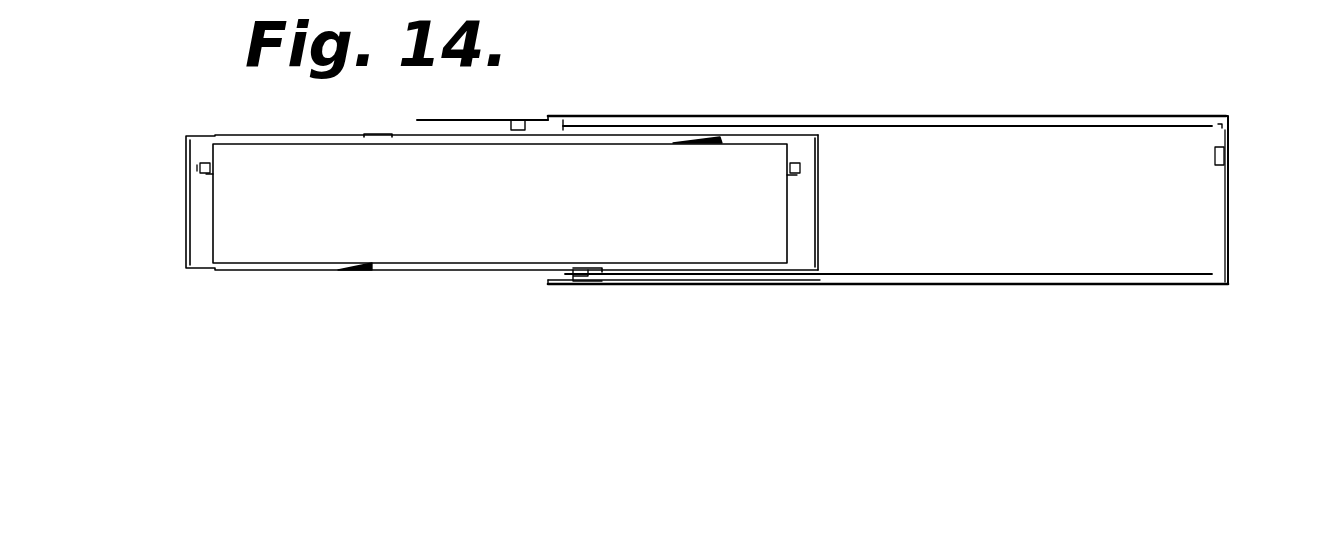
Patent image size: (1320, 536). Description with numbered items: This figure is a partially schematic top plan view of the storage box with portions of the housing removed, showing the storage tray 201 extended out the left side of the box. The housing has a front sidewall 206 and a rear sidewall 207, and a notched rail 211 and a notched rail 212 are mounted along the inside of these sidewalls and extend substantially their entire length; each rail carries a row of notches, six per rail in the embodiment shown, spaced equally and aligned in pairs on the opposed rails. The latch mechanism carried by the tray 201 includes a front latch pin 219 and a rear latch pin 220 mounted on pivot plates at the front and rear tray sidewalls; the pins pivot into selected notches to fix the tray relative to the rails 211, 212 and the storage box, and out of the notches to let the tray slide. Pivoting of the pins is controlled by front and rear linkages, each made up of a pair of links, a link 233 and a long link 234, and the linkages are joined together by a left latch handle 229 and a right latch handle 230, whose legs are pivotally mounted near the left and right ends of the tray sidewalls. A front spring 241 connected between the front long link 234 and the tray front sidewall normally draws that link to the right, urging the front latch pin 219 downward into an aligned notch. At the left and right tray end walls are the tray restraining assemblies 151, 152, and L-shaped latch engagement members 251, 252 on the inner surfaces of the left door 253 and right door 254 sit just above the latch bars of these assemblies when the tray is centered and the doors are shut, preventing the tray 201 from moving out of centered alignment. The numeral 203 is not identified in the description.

The storage tray 201 is at (198, 102).
The tray restraining assembly 151 is at (200, 165).
The tray restraining assembly 152 is at (800, 170).
The end cap 203 is at (1203, 117).
The front sidewall 206 is at (1158, 286).
The rear sidewall 207 is at (1074, 116).
The notched rail 211 is at (1066, 276).
The notched rail 212 is at (1055, 128).
The front latch pin 219 is at (585, 282).
The rear latch pin 220 is at (377, 134).
The left latch handle 229 is at (186, 226).
The right latch handle 230 is at (822, 190).
The link 233 is at (290, 135).
The long link 234 is at (445, 145).
The front spring 241 is at (366, 272).
The latch engagement member 251 is at (518, 121).
The latch engagement member 252 is at (1223, 146).
The left door 253 is at (452, 119).
The right door 254 is at (1229, 191).